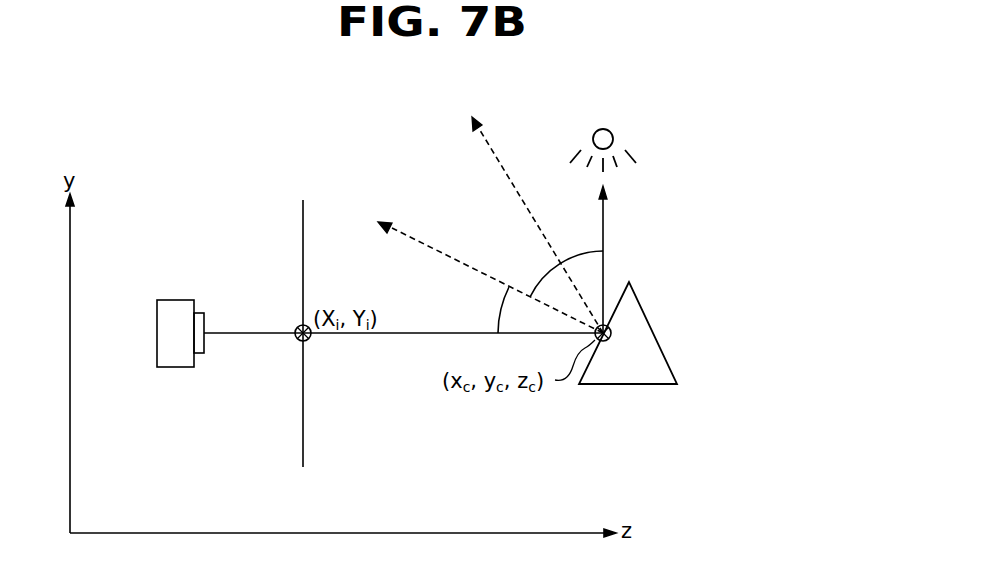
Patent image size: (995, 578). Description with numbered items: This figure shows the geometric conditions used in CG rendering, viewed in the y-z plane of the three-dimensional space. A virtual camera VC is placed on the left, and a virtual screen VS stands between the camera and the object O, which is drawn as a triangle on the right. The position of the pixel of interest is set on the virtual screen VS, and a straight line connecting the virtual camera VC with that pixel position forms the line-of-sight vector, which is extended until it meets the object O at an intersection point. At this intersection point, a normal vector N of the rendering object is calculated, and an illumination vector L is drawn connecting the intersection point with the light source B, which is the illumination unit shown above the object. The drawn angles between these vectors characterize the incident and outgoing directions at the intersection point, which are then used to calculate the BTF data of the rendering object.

The virtual camera VC is at (172, 299).
The virtual screen VS is at (305, 265).
The object O is at (661, 349).
The normal vector N is at (482, 266).
The specular reflection direction S is at (531, 215).
The illumination vector L is at (612, 258).
The light source B is at (613, 140).